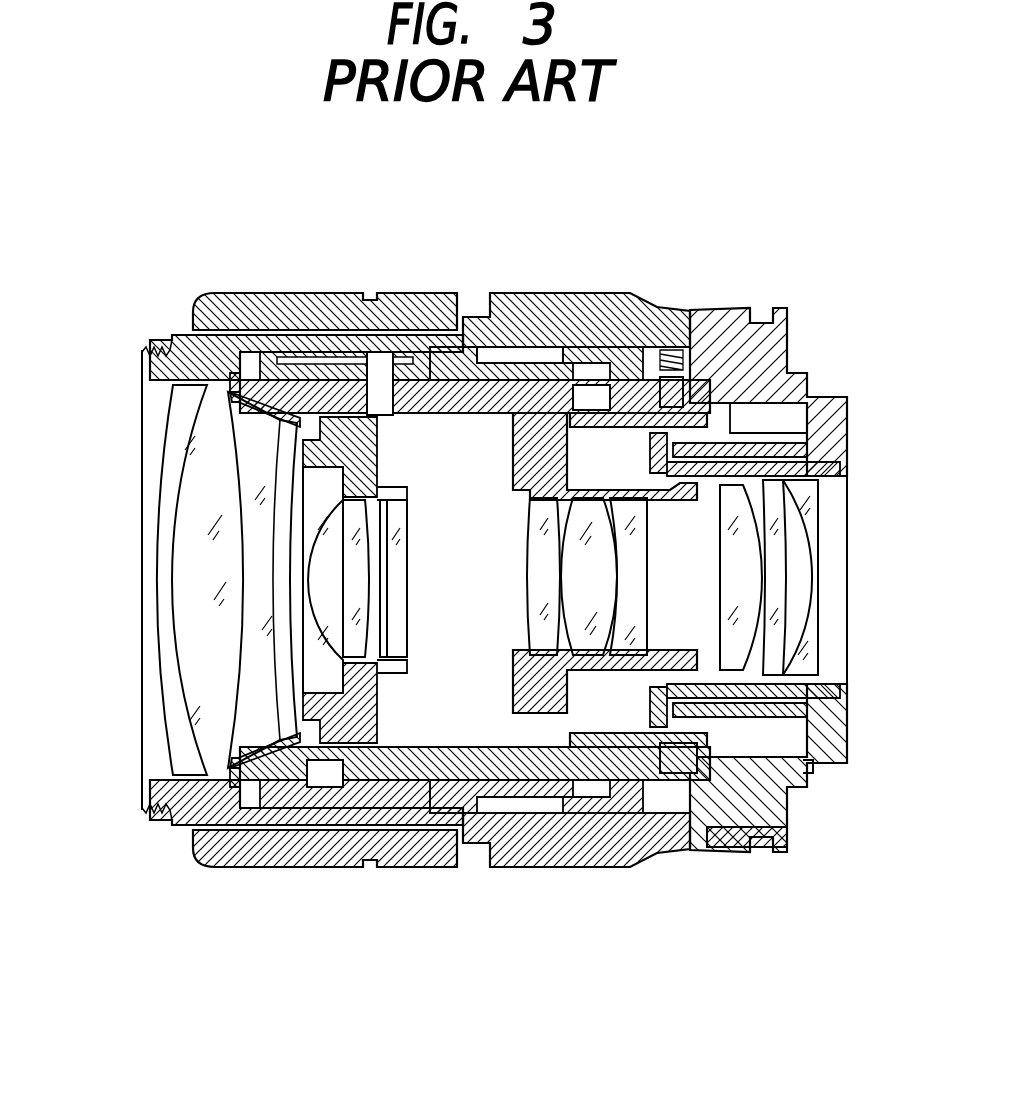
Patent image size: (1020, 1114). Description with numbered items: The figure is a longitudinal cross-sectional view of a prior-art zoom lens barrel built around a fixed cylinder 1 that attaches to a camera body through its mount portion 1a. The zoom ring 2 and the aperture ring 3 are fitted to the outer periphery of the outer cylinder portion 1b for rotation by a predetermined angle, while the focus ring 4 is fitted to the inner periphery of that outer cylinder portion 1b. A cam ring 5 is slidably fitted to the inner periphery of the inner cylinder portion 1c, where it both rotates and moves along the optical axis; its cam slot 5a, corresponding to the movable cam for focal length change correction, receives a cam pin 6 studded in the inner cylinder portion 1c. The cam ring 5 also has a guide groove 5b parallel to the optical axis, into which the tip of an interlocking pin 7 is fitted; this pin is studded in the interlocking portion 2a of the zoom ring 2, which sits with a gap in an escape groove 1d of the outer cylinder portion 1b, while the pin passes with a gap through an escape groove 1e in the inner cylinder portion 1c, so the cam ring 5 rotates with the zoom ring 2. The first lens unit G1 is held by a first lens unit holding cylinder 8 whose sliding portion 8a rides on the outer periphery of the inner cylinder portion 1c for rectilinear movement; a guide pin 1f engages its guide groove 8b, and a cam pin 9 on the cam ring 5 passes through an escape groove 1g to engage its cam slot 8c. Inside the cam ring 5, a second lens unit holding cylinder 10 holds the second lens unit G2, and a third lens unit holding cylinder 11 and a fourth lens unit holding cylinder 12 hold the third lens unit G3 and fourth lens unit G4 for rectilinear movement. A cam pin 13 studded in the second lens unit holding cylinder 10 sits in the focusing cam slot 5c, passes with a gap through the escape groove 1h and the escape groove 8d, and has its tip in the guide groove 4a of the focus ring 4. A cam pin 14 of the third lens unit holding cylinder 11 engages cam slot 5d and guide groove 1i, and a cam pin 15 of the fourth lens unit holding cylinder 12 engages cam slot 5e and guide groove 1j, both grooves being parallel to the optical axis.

The fixed cylinder 1 is at (773, 343).
The mount portion 1a is at (813, 773).
The outer cylinder portion 1b is at (521, 320).
The inner cylinder portion 1c is at (213, 305).
The escape groove 1d is at (655, 330).
The escape groove 1e is at (727, 340).
The guide pin 1f is at (268, 305).
The escape groove 1g is at (215, 845).
The escape groove 1h is at (325, 350).
The guide groove 1i is at (540, 350).
The guide groove 1j is at (672, 780).
The zoom ring 2 is at (603, 330).
The interlocking portion 2a is at (690, 375).
The aperture ring 3 is at (722, 848).
The focus ring 4 is at (290, 808).
The guide groove 4a is at (345, 362).
The cam ring 5 is at (547, 785).
The cam slot 5a is at (440, 414).
The guide groove 5b is at (733, 417).
The cam slot 5c is at (415, 340).
The cam slot 5d is at (655, 348).
The cam slot 5e is at (625, 780).
The cam pin 6 is at (473, 414).
The interlocking pin 7 is at (790, 368).
The first lens unit holding cylinder 8 is at (180, 832).
The sliding portion 8a is at (262, 843).
The guide groove 8b is at (303, 340).
The cam slot 8c is at (500, 800).
The escape groove 8d is at (480, 340).
The cam pin 9 is at (330, 820).
The second lens unit holding cylinder 10 is at (340, 790).
The third lens unit holding cylinder 11 is at (520, 695).
The fourth lens unit holding cylinder 12 is at (837, 690).
The cam pin 13 is at (383, 352).
The cam pin 14 is at (580, 385).
The cam pin 15 is at (682, 848).
The first lens unit G1 is at (236, 649).
The second lens unit G2 is at (397, 557).
The third lens unit G3 is at (553, 617).
The fourth lens unit G4 is at (745, 627).